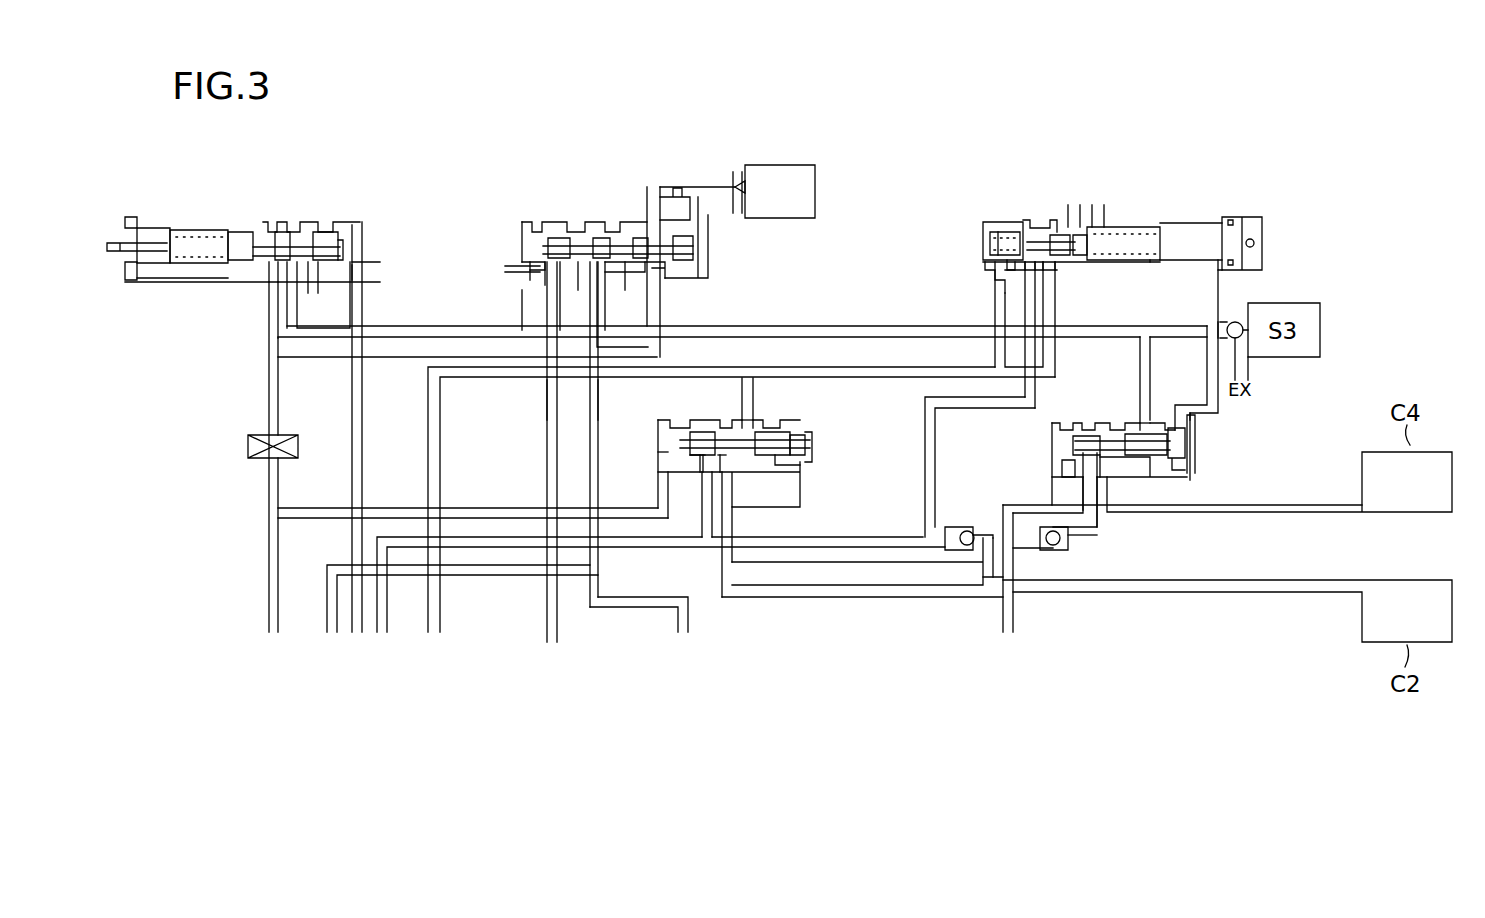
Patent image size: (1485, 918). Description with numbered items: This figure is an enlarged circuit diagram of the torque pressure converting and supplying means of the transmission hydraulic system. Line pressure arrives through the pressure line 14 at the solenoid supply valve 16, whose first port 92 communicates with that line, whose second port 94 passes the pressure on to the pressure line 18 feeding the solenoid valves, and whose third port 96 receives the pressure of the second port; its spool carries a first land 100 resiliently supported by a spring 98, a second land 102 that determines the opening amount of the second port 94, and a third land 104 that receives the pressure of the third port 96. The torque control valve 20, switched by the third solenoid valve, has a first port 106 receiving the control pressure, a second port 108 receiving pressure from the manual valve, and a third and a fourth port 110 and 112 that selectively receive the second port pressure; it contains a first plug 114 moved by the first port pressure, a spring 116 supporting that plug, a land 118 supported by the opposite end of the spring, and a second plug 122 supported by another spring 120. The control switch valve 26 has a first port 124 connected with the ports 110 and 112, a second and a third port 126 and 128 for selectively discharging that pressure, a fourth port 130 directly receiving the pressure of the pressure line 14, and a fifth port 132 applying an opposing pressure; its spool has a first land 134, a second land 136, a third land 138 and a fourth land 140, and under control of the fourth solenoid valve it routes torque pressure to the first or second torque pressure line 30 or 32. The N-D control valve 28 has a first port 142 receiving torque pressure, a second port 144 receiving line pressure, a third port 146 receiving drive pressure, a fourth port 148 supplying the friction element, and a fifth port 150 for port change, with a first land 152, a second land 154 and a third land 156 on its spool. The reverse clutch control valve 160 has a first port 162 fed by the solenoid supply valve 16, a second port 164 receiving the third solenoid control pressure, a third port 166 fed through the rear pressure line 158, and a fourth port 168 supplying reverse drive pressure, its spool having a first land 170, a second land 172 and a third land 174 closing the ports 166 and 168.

The pressure line 14 is at (268, 578).
The solenoid supply valve 16 is at (380, 247).
The pressure line 18 is at (880, 325).
The torque control valve 20 is at (1275, 243).
The control switch valve 26 is at (725, 252).
The N-D control valve 28 is at (835, 440).
The first torque pressure line 30 is at (546, 400).
The second torque pressure line 32 is at (598, 400).
The first port 92 is at (273, 268).
The second port 94 is at (295, 268).
The third port 96 is at (372, 268).
The spring 98 is at (193, 240).
The first land 100 is at (240, 240).
The second land 102 is at (283, 240).
The third land 104 is at (325, 240).
The first port 106 is at (1218, 274).
The second port 108 is at (1035, 268).
The third port 110 is at (1052, 267).
The fourth port 112 is at (996, 270).
The first plug 114 is at (1142, 262).
The spring 116 is at (1128, 237).
The land 118 is at (1057, 237).
The spring 120 is at (988, 243).
The second plug 122 is at (1000, 232).
The first port 124 is at (545, 263).
The second port 126 is at (538, 265).
The third port 128 is at (618, 263).
The fourth port 130 is at (663, 273).
The fifth port 132 is at (655, 225).
The first land 134 is at (560, 238).
The second land 136 is at (598, 238).
The third land 138 is at (643, 238).
The fourth land 140 is at (684, 245).
The first port 142 is at (752, 428).
The second port 144 is at (663, 456).
The third port 146 is at (703, 455).
The fourth port 148 is at (725, 458).
The fifth port 150 is at (803, 463).
The first land 152 is at (705, 430).
The second land 154 is at (790, 430).
The third land 156 is at (800, 440).
The rear pressure line 158 is at (1100, 553).
The reverse clutch control valve 160 is at (1210, 447).
The first port 162 is at (1150, 412).
The second port 164 is at (1213, 420).
The third port 166 is at (1105, 463).
The fourth port 168 is at (1040, 476).
The first land 170 is at (1183, 450).
The second land 172 is at (1133, 428).
The third land 174 is at (1088, 436).